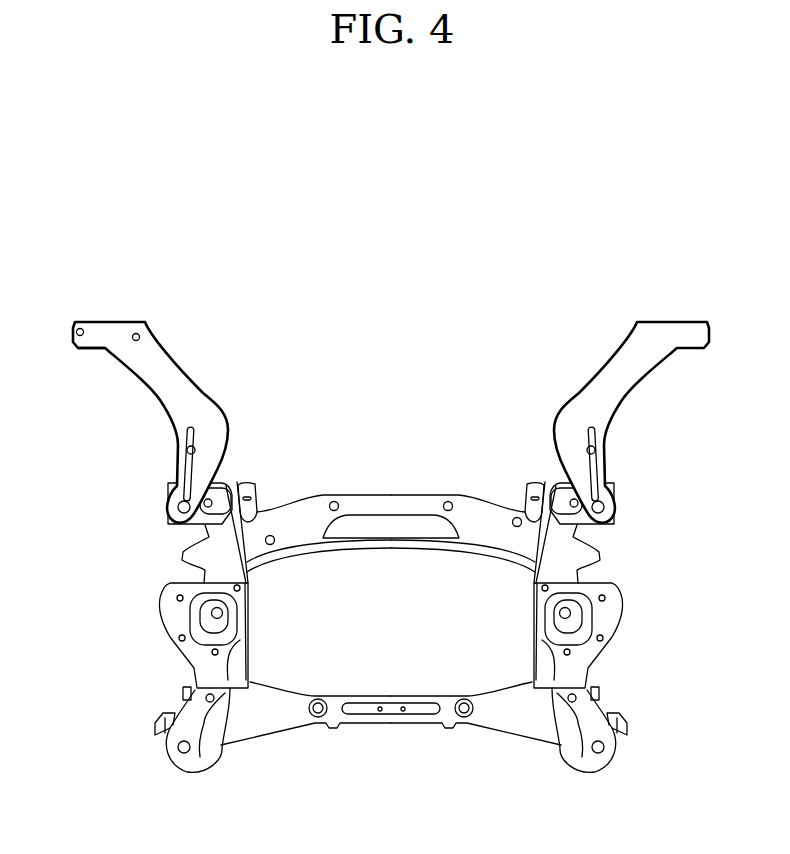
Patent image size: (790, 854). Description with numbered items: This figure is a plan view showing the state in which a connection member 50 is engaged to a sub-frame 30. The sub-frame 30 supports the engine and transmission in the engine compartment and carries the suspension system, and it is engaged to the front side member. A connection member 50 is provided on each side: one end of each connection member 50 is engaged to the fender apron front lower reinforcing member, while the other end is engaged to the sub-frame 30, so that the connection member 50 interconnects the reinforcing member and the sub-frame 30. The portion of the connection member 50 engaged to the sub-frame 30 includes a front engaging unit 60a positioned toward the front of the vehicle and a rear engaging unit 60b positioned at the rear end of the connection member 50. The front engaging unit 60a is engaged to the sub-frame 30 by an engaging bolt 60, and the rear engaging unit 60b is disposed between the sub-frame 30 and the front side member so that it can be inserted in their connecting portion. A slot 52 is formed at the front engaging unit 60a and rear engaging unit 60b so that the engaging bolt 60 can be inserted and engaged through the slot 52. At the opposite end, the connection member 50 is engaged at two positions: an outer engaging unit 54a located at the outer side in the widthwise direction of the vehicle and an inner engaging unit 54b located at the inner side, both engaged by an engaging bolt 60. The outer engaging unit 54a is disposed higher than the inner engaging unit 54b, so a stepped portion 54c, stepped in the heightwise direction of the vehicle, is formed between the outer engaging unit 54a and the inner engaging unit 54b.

The sub-frame 30 is at (387, 497).
The connection member 50 is at (190, 376).
The slot 52 is at (176, 482).
The outer engaging unit 54a is at (80, 327).
The inner engaging unit 54b is at (137, 331).
The stepped portion 54c is at (103, 350).
The engaging bolt 60 is at (604, 510).
The front engaging unit 60a is at (187, 453).
The rear engaging unit 60b is at (176, 512).